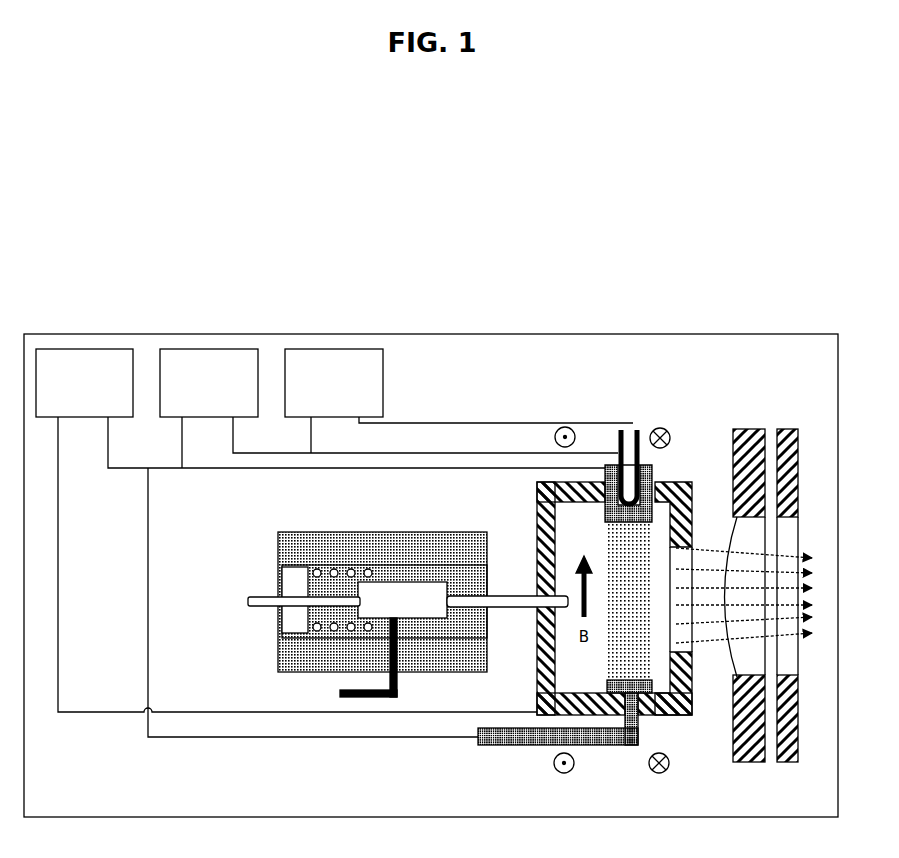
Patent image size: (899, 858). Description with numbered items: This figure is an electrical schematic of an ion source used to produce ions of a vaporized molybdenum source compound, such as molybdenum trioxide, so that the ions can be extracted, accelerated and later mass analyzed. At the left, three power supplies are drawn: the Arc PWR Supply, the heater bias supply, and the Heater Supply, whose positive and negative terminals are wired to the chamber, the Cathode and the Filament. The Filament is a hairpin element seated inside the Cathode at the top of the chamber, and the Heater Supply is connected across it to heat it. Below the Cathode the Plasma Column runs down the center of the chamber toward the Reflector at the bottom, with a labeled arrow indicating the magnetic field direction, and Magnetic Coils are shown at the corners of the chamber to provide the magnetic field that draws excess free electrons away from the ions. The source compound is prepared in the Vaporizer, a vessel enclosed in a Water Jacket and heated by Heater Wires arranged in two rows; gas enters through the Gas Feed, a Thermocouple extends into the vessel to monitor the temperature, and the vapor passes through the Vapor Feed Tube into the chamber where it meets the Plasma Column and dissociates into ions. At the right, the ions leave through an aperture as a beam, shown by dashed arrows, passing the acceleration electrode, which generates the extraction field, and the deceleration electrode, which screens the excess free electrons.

The arc power supply Arc PWR Supply is at (84, 383).
The heater supply Heater Supply is at (334, 383).
The magnetic coils Magnetic Coils is at (578, 768).
The water jacket Water Jacket is at (393, 541).
The vaporizer Vaporizer is at (393, 575).
The heater wires Heater Wires is at (312, 629).
The gas feed Gas Feed is at (247, 596).
The thermocouple Thermocouple is at (323, 660).
The vapor feed tube Vapor Feed Tube is at (508, 588).
The plasma column Plasma Column is at (623, 642).
The reflector Reflector is at (646, 723).
The cathode Cathode is at (655, 477).
The filament Filament is at (630, 425).